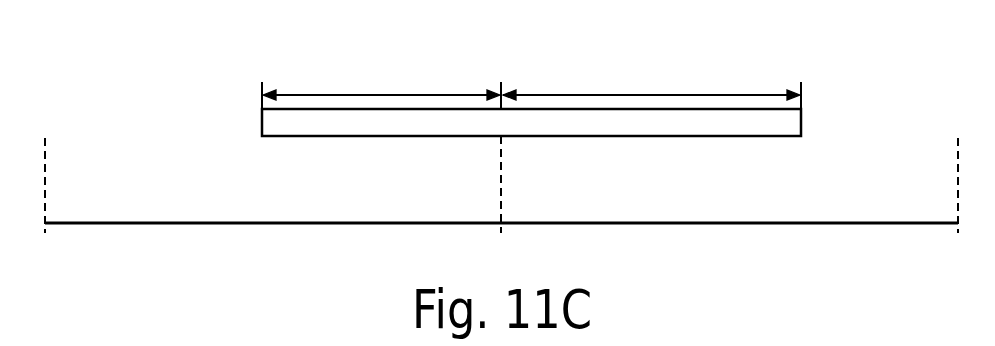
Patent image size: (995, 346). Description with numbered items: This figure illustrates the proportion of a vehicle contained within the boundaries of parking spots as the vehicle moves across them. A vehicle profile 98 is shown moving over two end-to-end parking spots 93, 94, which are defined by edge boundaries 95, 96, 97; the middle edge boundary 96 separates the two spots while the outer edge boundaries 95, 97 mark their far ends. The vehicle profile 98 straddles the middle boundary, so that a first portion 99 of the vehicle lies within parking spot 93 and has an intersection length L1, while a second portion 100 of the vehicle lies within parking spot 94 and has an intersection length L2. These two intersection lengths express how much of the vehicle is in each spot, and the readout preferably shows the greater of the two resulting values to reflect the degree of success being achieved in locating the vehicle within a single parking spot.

The parking spot 93 is at (128, 224).
The parking spot 94 is at (875, 224).
The edge boundary 95 is at (46, 158).
The edge boundary 96 is at (500, 185).
The edge boundary 97 is at (956, 172).
The vehicle profile 98 is at (680, 137).
The first portion of the vehicle 99 is at (461, 93).
The second portion of the vehicle 100 is at (748, 93).